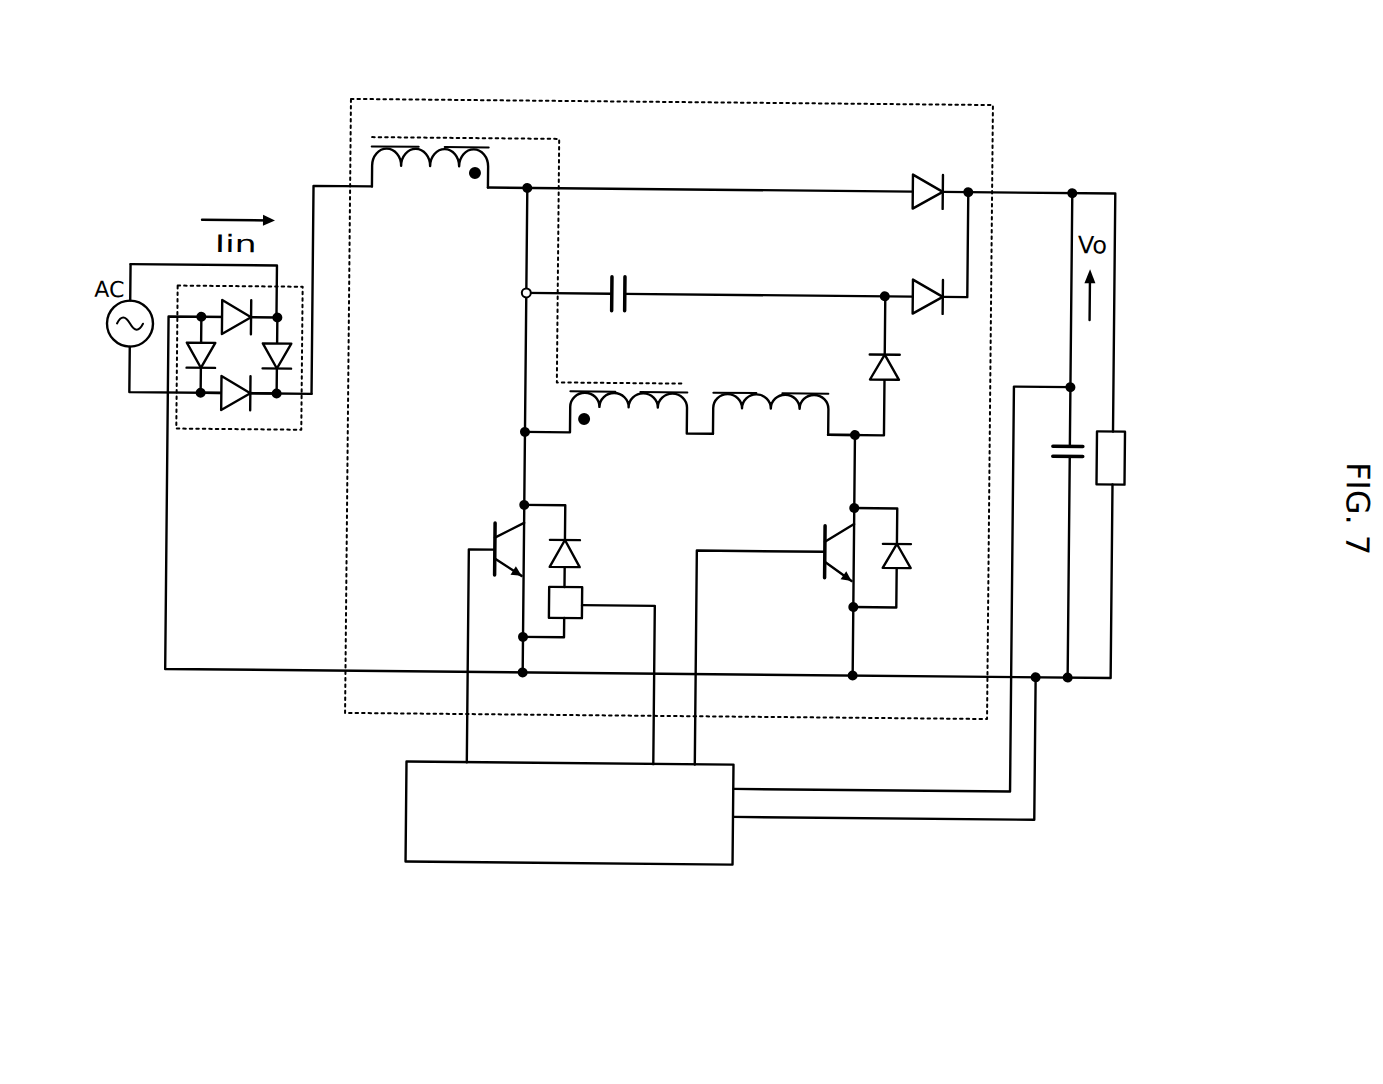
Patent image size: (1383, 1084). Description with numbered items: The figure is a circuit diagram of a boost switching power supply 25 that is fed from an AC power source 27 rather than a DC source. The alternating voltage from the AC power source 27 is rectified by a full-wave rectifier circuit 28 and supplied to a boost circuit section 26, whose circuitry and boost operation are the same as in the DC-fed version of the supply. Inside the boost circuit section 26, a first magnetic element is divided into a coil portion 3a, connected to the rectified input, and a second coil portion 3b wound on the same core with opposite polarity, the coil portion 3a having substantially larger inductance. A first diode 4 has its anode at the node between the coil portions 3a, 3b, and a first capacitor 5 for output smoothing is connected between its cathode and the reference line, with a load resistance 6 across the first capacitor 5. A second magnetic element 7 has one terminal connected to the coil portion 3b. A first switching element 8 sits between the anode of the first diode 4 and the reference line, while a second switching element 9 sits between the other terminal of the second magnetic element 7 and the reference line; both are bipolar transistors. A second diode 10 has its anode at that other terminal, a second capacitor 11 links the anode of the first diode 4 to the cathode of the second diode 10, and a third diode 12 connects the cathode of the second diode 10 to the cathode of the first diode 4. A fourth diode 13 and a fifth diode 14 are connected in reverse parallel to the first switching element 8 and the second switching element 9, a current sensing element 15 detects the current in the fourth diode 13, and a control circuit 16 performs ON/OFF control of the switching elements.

The coil portion 3a is at (440, 175).
The second coil portion 3b is at (614, 383).
The first diode 4 is at (925, 175).
The first capacitor 5 is at (1062, 453).
The load resistance 6 is at (1106, 482).
The second magnetic element 7 is at (738, 394).
The first switching element 8 is at (494, 536).
The second switching element 9 is at (823, 538).
The second diode 10 is at (869, 366).
The second capacitor 11 is at (626, 288).
The third diode 12 is at (914, 282).
The fourth diode 13 is at (571, 541).
The fifth diode 14 is at (901, 542).
The current sensing element 15 is at (584, 590).
The control circuit 16 is at (728, 759).
The boost switching power supply 25 is at (1090, 770).
The boost circuit section 26 is at (388, 718).
The AC power source 27 is at (112, 353).
The full-wave rectifier circuit 28 is at (258, 434).